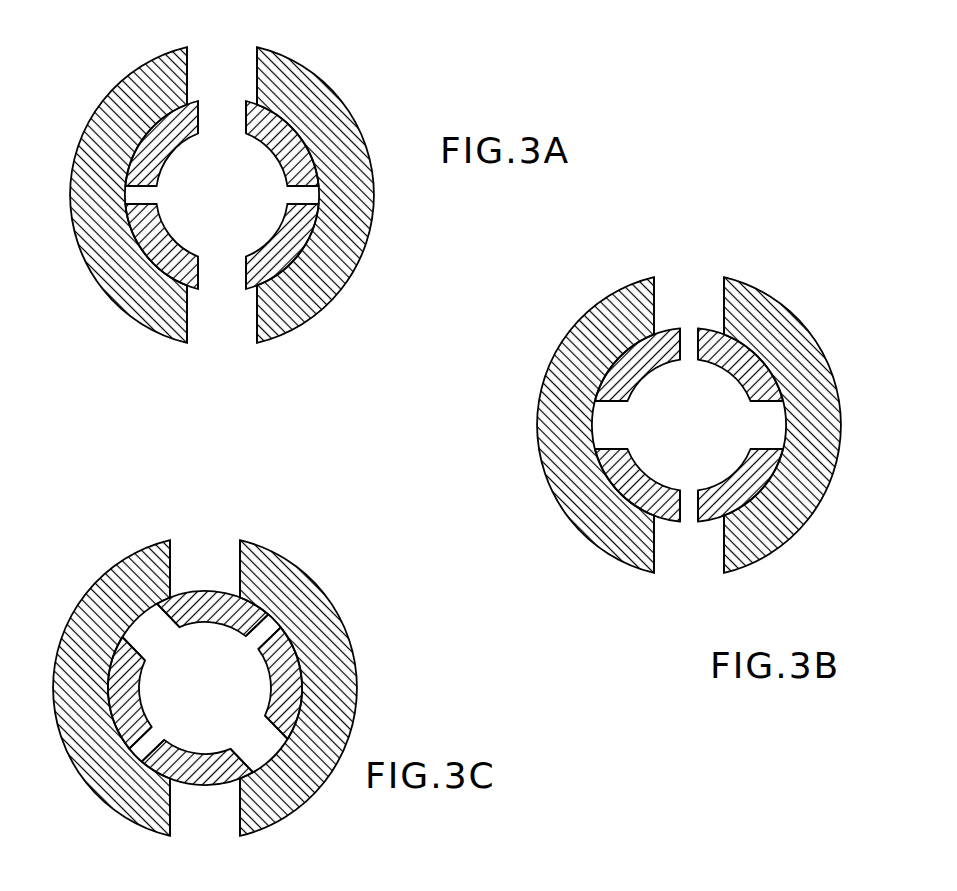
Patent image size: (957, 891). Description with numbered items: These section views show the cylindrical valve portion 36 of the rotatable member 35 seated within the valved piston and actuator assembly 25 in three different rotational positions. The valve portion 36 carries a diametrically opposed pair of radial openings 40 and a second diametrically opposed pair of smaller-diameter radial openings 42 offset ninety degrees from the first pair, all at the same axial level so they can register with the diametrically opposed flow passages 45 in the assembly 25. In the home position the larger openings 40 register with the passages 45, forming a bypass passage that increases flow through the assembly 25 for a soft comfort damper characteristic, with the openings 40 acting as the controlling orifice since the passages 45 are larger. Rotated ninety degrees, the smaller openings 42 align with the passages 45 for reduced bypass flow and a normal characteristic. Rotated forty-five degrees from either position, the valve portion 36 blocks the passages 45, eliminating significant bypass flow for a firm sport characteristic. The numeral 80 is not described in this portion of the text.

In FIG. 3A, the valved piston and actuator assembly 25 is at (298, 100).
In FIG. 3B, the valved piston and actuator assembly 25 is at (767, 323).
In FIG. 3C, the valved piston and actuator assembly 25 is at (300, 607).
In FIG. 3A, the rotatable member 35 is at (133, 112).
In FIG. 3B, the rotatable member 35 is at (691, 419).
In FIG. 3C, the rotatable member 35 is at (122, 673).
In FIG. 3A, the cylindrical valve portion 36 is at (298, 152).
In FIG. 3B, the cylindrical valve portion 36 is at (753, 367).
In FIG. 3C, the cylindrical valve portion 36 is at (290, 650).
In FIG. 3A, the radial openings 40 is at (247, 117).
In FIG. 3B, the radial openings 40 is at (603, 405).
In FIG. 3C, the radial openings 40 is at (118, 597).
In FIG. 3A, the radial openings 42 is at (150, 191).
In FIG. 3B, the radial openings 42 is at (695, 343).
In FIG. 3C, the radial openings 42 is at (255, 623).
In FIG. 3A, the flow passages 45 is at (188, 79).
In FIG. 3B, the flow passages 45 is at (655, 310).
In FIG. 3C, the flow passages 45 is at (168, 583).
In FIG. 3B, the element of adjacent figure 80 is at (707, 890).